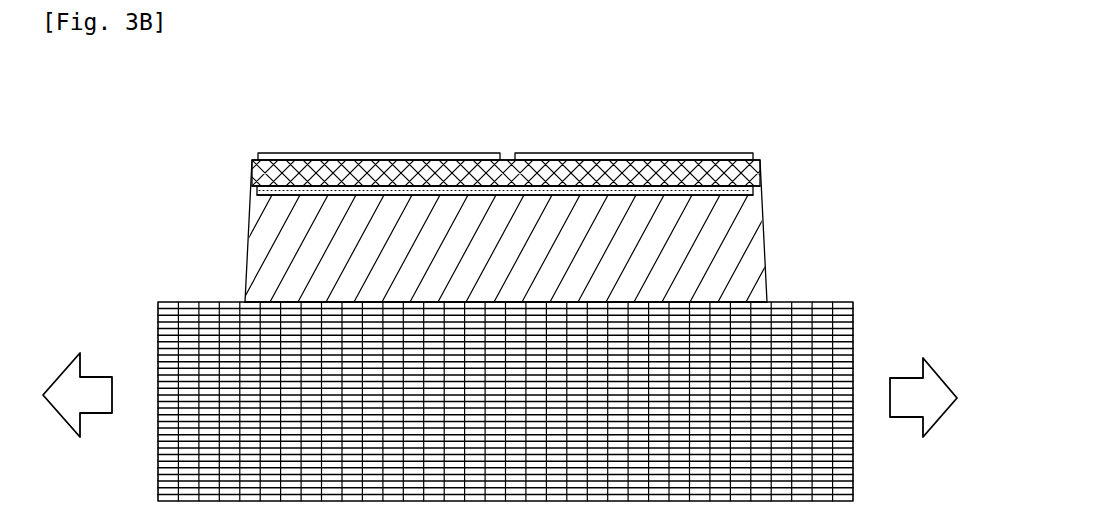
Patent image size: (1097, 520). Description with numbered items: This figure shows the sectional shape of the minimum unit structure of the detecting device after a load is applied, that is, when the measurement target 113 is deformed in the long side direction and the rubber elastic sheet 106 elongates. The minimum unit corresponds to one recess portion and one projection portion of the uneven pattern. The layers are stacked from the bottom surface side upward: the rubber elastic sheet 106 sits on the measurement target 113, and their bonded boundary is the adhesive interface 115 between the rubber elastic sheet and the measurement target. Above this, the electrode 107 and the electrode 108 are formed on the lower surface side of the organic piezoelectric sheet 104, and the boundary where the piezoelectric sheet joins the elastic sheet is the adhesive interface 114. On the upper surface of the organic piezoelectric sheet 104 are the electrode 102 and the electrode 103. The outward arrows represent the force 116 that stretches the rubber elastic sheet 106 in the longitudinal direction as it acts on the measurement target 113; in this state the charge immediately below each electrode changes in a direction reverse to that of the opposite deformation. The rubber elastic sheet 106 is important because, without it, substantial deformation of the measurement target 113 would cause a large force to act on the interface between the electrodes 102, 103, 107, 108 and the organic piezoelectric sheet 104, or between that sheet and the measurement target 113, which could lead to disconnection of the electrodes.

The electrode on upper surface side of organic piezoelectric sheet 102 is at (635, 152).
The electrode on upper surface side of organic piezoelectric sheet 103 is at (363, 152).
The organic piezoelectric sheet 104 is at (758, 164).
The adhesive interface between organic piezoelectric sheet and rubber elastic sheet 114 is at (760, 184).
The electrode on lower surface side of organic piezoelectric sheet 108 is at (713, 197).
The electrode on lower surface side of organic piezoelectric sheet 107 is at (285, 197).
The rubber elastic sheet 106 is at (262, 262).
The measurement target 113 is at (173, 325).
The adhesive interface between rubber elastic sheet and measurement target 115 is at (768, 300).
The force applied to the measurement target 116 is at (97, 413).